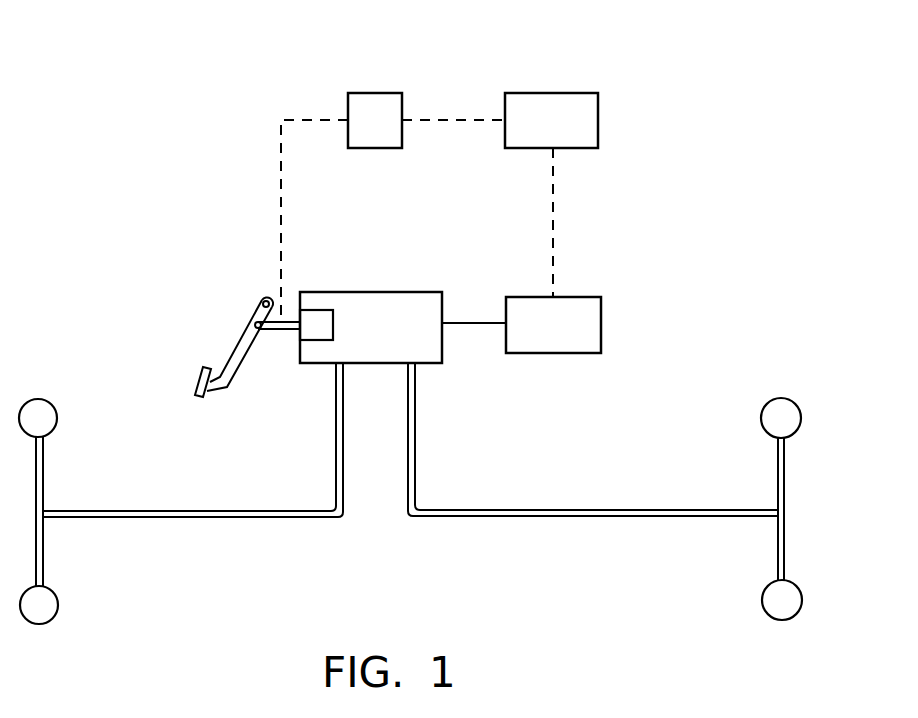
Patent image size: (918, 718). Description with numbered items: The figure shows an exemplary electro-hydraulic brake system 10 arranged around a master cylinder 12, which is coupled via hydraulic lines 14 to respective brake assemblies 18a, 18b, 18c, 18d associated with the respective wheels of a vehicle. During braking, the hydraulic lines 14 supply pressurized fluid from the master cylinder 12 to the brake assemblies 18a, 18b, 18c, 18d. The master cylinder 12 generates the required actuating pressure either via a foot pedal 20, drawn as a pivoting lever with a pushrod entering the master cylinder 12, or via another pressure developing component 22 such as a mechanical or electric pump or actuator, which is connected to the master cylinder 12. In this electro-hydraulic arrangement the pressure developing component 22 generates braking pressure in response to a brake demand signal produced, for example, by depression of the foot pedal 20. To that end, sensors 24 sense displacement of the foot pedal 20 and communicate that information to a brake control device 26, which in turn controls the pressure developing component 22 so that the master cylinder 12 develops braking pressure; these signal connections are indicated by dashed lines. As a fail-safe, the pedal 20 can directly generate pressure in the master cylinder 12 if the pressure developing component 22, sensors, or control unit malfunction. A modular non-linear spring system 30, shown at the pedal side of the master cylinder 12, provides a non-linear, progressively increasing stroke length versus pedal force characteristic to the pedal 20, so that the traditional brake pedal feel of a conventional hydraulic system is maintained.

The brake system 10 is at (190, 174).
The master cylinder 12 is at (384, 292).
The hydraulic lines 14 is at (336, 457).
The brake assembly 18a is at (45, 400).
The brake assembly 18b is at (50, 620).
The brake assembly 18c is at (770, 400).
The brake assembly 18d is at (772, 617).
The foot pedal 20 is at (200, 375).
The pressure developing component 22 is at (578, 297).
The sensors 24 is at (373, 93).
The brake control device 26 is at (563, 93).
The modular non-linear spring system 30 is at (320, 310).